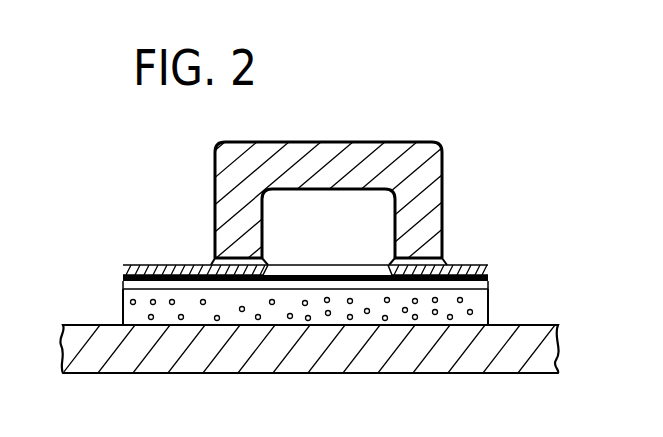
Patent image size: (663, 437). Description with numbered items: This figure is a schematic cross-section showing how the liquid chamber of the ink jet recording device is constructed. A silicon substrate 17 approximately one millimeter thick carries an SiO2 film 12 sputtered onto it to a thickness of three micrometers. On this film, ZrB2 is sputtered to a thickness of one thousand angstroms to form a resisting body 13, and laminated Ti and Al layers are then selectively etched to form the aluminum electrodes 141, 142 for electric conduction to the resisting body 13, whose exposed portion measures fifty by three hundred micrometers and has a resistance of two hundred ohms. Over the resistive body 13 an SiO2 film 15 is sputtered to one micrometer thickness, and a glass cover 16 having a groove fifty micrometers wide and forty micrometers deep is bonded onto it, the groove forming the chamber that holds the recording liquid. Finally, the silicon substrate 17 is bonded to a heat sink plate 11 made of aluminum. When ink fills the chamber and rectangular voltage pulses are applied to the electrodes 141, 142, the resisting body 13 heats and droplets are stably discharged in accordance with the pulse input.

The heat sink plate 11 is at (193, 357).
The SiO2 film 12 is at (490, 287).
The resisting body 13 is at (488, 279).
The aluminum electrode 141 is at (167, 265).
The aluminum electrode 142 is at (480, 263).
The SiO2 film 15 is at (422, 260).
The glass cover 16 is at (425, 159).
The silicon substrate 17 is at (132, 313).